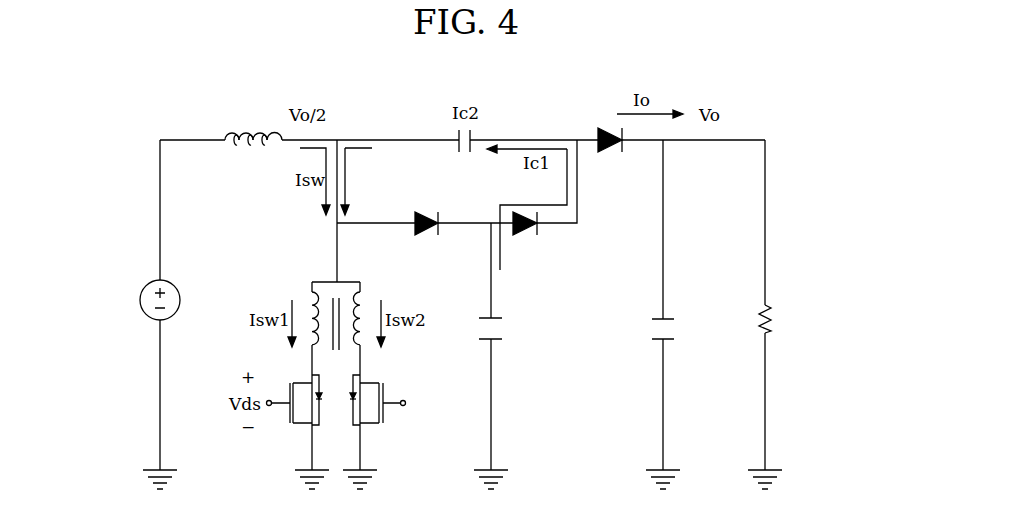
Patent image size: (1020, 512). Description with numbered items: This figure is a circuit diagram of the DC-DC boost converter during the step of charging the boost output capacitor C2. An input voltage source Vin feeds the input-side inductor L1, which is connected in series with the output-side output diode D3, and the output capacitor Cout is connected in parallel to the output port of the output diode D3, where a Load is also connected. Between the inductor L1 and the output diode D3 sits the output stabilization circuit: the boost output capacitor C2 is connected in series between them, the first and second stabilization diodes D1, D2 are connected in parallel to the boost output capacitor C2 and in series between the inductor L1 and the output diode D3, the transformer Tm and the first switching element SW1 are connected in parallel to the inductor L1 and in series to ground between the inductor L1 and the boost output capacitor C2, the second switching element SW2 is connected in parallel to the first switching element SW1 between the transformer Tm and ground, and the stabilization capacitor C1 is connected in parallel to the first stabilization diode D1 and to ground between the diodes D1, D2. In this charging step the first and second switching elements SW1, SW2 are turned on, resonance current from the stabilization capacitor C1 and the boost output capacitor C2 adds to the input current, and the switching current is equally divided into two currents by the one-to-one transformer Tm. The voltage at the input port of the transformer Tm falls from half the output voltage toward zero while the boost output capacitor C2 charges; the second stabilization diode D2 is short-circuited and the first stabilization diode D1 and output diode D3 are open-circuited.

The input voltage source Vin is at (141, 300).
The inductor L1 is at (253, 157).
The boost output capacitor C2 is at (464, 154).
The first stabilization diode D1 is at (427, 237).
The second stabilization diode D2 is at (529, 237).
The output diode D3 is at (613, 158).
The stabilization capacitor C1 is at (506, 328).
The output capacitor Cout is at (686, 338).
The load Load is at (794, 319).
The transformer Tm is at (361, 328).
The first switching element SW1 is at (295, 422).
The second switching element SW2 is at (378, 422).